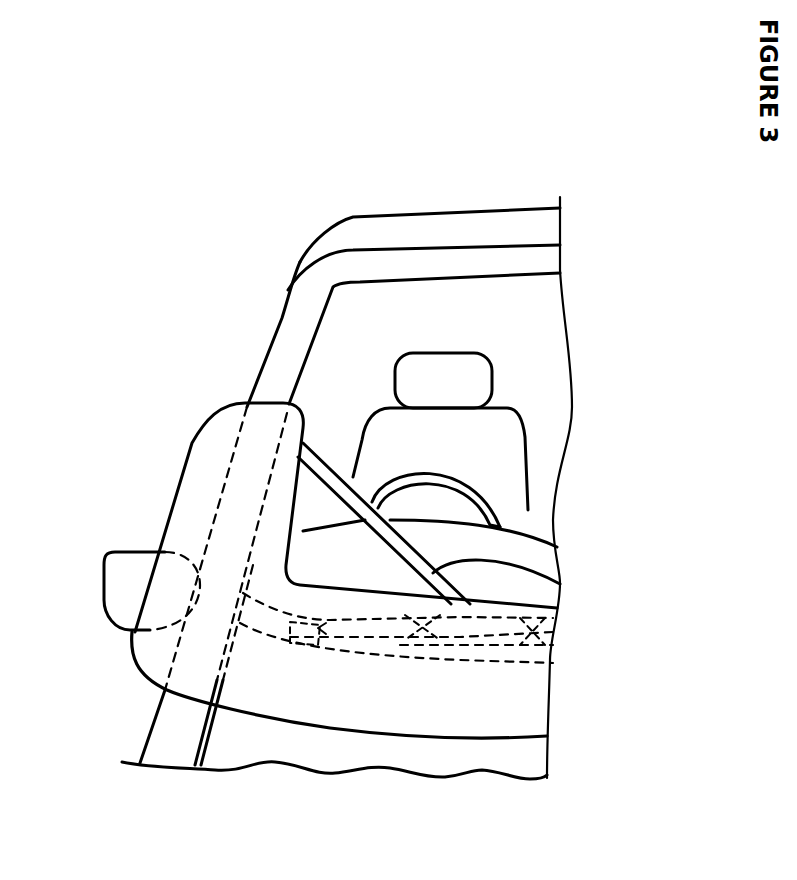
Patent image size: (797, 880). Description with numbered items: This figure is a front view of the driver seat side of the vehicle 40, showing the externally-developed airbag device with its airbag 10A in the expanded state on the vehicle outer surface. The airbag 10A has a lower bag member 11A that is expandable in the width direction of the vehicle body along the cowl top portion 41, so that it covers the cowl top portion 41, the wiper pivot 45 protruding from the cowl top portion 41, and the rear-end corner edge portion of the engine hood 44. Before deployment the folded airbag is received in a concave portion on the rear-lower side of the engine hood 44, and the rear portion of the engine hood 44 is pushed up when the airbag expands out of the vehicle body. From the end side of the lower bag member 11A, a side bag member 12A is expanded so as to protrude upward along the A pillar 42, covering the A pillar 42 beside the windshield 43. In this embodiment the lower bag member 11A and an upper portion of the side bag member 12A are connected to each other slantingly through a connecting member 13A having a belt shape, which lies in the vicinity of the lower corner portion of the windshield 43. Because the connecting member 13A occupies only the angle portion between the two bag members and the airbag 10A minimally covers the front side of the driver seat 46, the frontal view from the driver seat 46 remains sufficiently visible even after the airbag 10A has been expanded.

The airbag 10A is at (128, 680).
The lower bag member 11A is at (248, 700).
The side bag member 12A is at (203, 452).
The connecting member 13A is at (560, 584).
The vehicle 40 is at (470, 203).
The cowl top portion 41 is at (505, 657).
The A pillar 42 is at (287, 320).
The windshield 43 is at (358, 303).
The engine hood 44 is at (525, 762).
The wiper pivot 45 is at (300, 643).
The driver seat 46 is at (510, 373).